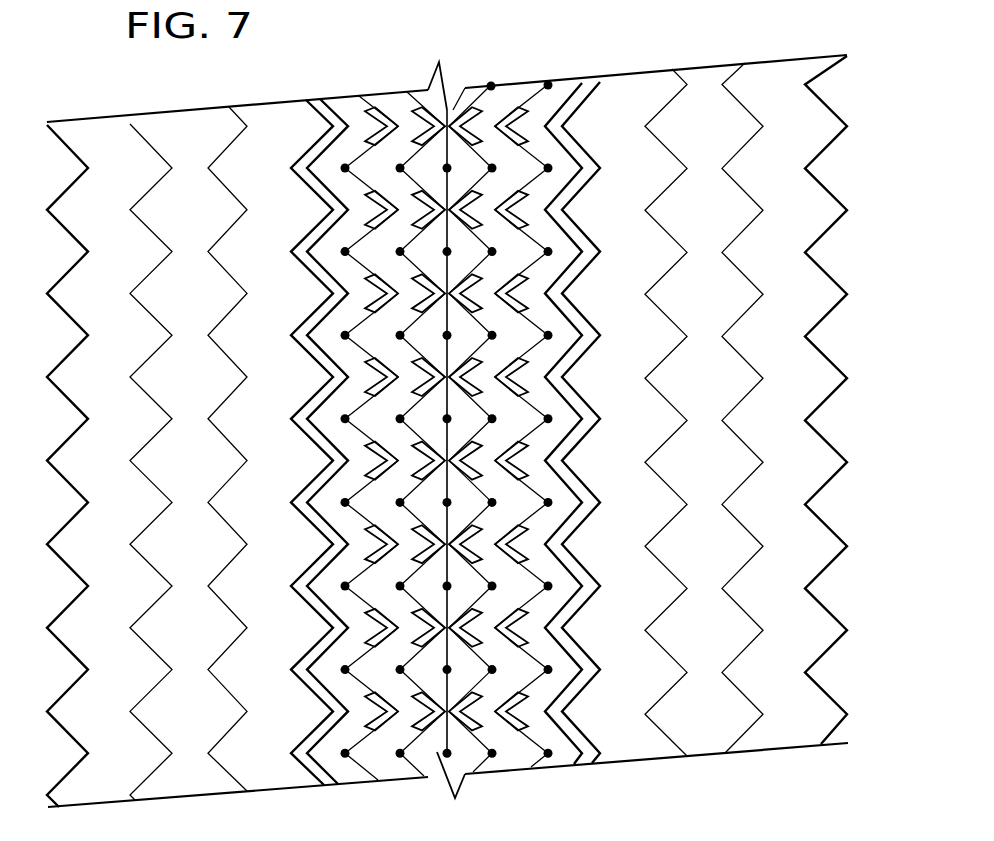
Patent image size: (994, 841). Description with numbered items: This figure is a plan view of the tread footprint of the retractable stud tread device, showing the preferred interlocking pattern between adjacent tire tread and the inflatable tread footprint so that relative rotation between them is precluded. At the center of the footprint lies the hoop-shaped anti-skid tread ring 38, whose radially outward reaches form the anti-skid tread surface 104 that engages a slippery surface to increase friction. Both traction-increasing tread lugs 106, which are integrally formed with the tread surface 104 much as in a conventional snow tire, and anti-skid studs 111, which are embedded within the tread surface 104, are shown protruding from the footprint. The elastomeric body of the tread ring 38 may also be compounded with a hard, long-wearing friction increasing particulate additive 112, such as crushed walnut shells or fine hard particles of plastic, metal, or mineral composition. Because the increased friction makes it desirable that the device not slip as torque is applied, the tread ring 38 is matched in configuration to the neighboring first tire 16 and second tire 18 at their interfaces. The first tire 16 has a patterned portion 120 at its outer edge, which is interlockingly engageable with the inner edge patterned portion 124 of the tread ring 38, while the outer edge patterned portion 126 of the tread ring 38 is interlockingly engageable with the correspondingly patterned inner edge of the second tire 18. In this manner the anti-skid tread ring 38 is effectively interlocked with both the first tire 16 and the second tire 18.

The first tire 16 is at (777, 735).
The second tire 18 is at (187, 786).
The tread ring 38 is at (510, 760).
The anti-skid tread surface 104 is at (548, 480).
The tread lugs 106 is at (387, 110).
The anti-skid studs 111 is at (443, 168).
The friction increasing particulate additive 112 is at (437, 754).
The patterned portion of first tire 120 is at (303, 184).
The inner edge patterned portion 124 is at (571, 312).
The outer edge patterned portion 126 is at (316, 194).